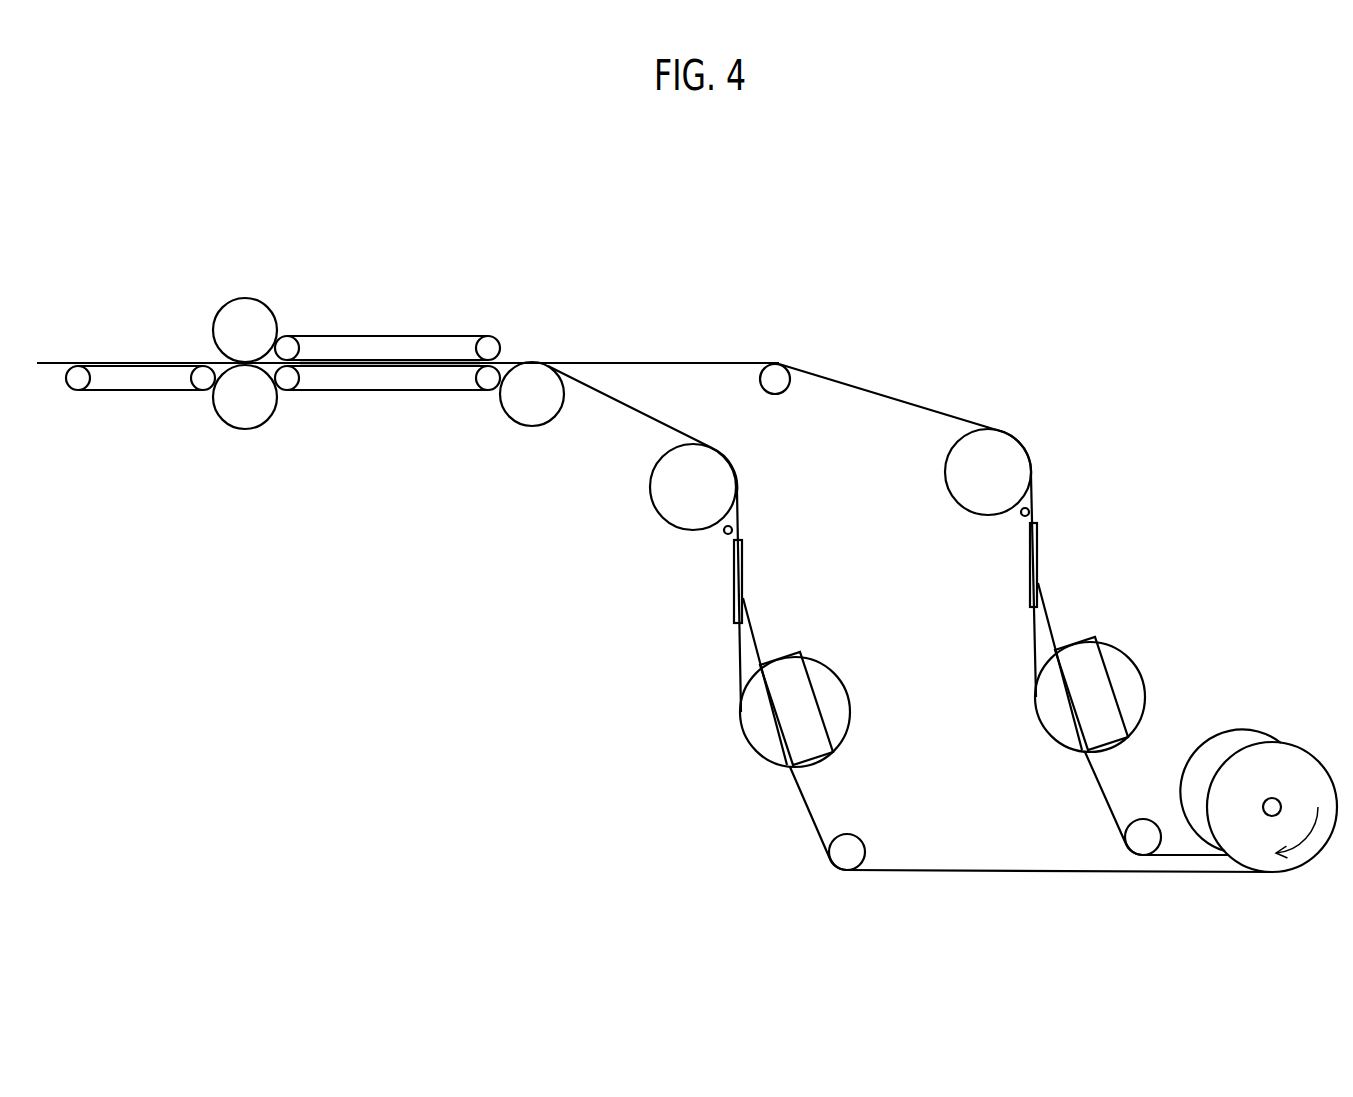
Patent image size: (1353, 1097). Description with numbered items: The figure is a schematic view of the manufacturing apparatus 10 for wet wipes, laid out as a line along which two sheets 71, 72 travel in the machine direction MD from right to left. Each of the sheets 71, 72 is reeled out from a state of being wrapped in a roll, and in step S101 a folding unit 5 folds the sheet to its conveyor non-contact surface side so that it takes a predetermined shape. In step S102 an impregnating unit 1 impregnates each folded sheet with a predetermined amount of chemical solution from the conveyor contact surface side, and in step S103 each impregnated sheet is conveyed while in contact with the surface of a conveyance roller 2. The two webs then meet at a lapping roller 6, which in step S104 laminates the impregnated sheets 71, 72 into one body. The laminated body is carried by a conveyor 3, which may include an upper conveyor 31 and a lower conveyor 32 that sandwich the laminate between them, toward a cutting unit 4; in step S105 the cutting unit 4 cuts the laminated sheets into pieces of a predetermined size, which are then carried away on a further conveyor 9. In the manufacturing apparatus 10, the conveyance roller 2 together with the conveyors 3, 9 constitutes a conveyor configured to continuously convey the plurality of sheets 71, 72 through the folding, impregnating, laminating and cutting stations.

The impregnating unit 1 is at (724, 533).
The conveyance roller 2 is at (663, 490).
The conveyor 3 is at (370, 458).
The upper conveyor 31 is at (386, 350).
The lower conveyor 32 is at (428, 380).
The cutting unit 4 is at (249, 320).
The folding unit 5 is at (744, 578).
The lapping roller 6 is at (533, 415).
The conveyor 9 is at (141, 381).
The manufacturing apparatus 10 is at (986, 282).
The sheet 71 is at (1310, 770).
The sheet 72 is at (1228, 742).
The folding step S101 is at (1024, 643).
The impregnating step S102 is at (750, 524).
The conveying step S103 is at (692, 424).
The laminating step S104 is at (539, 347).
The cutting step S105 is at (293, 311).
The machine direction MD is at (282, 440).